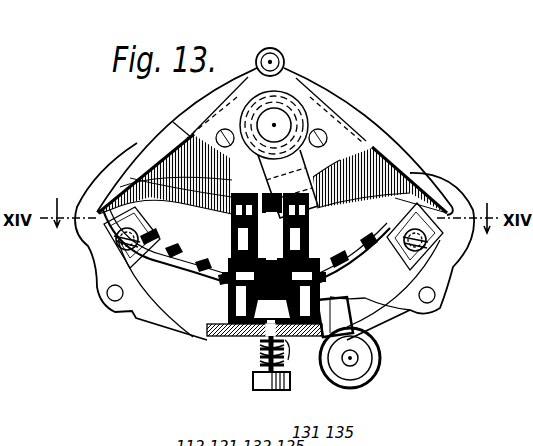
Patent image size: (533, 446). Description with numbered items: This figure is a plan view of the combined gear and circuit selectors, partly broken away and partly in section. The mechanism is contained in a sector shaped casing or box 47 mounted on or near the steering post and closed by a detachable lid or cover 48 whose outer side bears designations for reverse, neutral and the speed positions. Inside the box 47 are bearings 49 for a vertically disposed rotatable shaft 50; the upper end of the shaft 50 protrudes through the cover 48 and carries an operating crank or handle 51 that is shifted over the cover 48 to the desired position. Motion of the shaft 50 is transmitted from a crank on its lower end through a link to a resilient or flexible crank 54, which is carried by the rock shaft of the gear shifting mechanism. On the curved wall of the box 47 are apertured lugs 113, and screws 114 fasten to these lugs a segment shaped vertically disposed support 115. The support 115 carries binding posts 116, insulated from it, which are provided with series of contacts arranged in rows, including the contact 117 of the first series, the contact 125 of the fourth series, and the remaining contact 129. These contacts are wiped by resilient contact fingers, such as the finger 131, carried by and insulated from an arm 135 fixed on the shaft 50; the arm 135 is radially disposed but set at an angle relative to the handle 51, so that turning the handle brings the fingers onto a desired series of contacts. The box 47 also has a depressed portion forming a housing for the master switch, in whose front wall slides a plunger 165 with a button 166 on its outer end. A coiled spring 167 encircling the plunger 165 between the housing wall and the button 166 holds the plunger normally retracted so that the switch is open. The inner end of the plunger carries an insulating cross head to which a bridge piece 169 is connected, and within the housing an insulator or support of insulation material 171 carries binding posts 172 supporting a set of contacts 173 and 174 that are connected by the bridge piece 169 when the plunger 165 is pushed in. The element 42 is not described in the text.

The housing 42 is at (304, 201).
The sector shaped casing or box 47 is at (410, 160).
The detachable lid or cover 48 is at (347, 113).
The bearings 49 is at (320, 97).
The rotatable shaft 50 is at (283, 118).
The operating crank or handle 51 is at (288, 184).
The resilient or flexible crank 54 is at (382, 346).
The apertured lugs 113 is at (100, 250).
The screws 114 is at (437, 254).
The segment shaped support 115 is at (137, 314).
The binding posts 116 is at (371, 268).
The contact 117 is at (447, 175).
The contact 125 is at (137, 193).
The contact 129 is at (107, 176).
The resilient contact finger 131 is at (340, 247).
The arm 135 is at (160, 197).
The plunger 165 is at (292, 345).
The button 166 is at (268, 391).
The coiled spring 167 is at (265, 358).
The bridge piece 169 is at (242, 331).
The insulator or support of insulation material 171 is at (322, 250).
The binding posts 172 is at (232, 218).
The contact 173 is at (173, 340).
The contact 174 is at (410, 310).